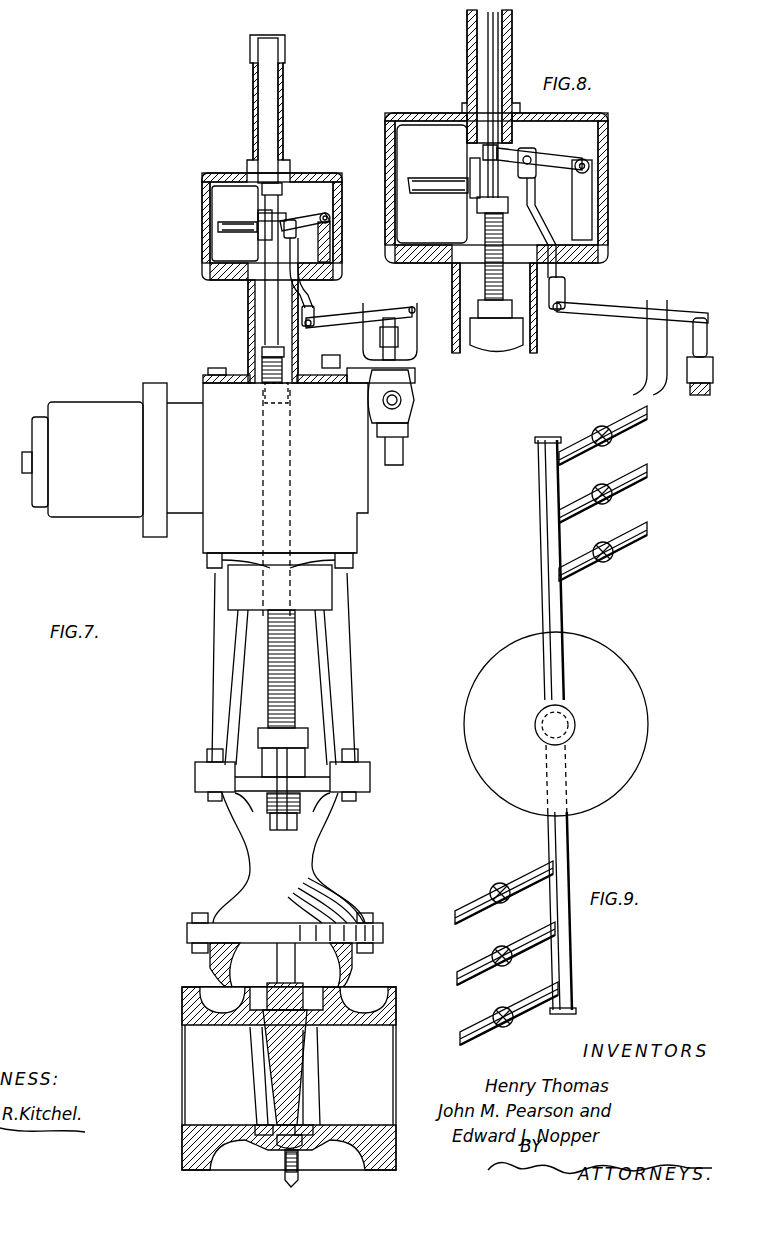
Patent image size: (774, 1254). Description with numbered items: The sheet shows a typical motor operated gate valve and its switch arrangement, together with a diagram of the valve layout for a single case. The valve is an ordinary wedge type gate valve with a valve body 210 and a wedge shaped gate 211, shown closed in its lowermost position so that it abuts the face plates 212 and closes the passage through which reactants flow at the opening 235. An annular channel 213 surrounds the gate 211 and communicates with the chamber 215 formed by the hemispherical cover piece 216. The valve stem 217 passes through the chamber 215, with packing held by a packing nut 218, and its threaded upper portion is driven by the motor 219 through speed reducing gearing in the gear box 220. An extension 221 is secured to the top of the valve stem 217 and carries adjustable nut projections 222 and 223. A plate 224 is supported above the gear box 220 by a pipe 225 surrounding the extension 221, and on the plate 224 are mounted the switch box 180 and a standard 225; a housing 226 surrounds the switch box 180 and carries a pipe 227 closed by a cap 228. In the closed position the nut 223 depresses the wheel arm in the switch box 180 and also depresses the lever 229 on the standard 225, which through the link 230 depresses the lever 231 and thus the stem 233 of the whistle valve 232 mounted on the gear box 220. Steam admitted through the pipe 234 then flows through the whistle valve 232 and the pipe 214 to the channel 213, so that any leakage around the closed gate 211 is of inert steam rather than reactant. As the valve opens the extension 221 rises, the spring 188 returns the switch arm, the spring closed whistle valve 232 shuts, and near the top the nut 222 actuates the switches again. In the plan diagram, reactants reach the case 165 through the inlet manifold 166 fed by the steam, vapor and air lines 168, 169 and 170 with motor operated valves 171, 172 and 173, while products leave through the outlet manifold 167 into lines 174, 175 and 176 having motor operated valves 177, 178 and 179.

In FIG. 9, the case 165 is at (614, 662).
In FIG. 9, the inlet manifold 166 is at (545, 572).
In FIG. 9, the outlet manifold 167 is at (570, 852).
In FIG. 9, the steam line 168 is at (628, 538).
In FIG. 9, the vapor line 169 is at (627, 480).
In FIG. 9, the air line 170 is at (626, 428).
In FIG. 9, the motor operated valve 171 is at (596, 549).
In FIG. 9, the motor operated valve 172 is at (594, 490).
In FIG. 9, the motor operated valve 173 is at (594, 431).
In FIG. 9, the steam line 174 is at (482, 902).
In FIG. 9, the vapor line 175 is at (487, 960).
In FIG. 9, the air line 176 is at (489, 1020).
In FIG. 9, the motor operated valve 177 is at (507, 900).
In FIG. 9, the motor operated valve 178 is at (509, 961).
In FIG. 9, the motor operated valve 179 is at (510, 1022).
In FIG. 7, the switch box 180 is at (210, 198).
In FIG. 8, the switch box 180 is at (430, 130).
In FIG. 7, the spring 188 is at (246, 222).
In FIG. 8, the spring 188 is at (455, 178).
In FIG. 7, the valve body 210 is at (180, 988).
In FIG. 7, the wedge shaped gate 211 is at (280, 1065).
In FIG. 7, the face plates 212 is at (305, 1125).
In FIG. 7, the annular channel 213 is at (288, 1142).
In FIG. 7, the pipe 214 is at (402, 398).
In FIG. 7, the chamber 215 is at (245, 965).
In FIG. 7, the hemispherical cover piece 216 is at (250, 888).
In FIG. 7, the valve stem 217 is at (282, 952).
In FIG. 7, the packing nut 218 is at (268, 737).
In FIG. 7, the motor 219 is at (75, 505).
In FIG. 7, the gear box 220 is at (197, 508).
In FIG. 7, the extension 221 is at (268, 314).
In FIG. 8, the extension 221 is at (497, 54).
In FIG. 7, the projection 222 is at (265, 352).
In FIG. 8, the projection 222 is at (477, 208).
In FIG. 7, the projection 223 is at (284, 188).
In FIG. 7, the plate 224 is at (208, 274).
In FIG. 8, the plate 224 is at (605, 255).
In FIG. 7, the pipe / standard 225 is at (332, 243).
In FIG. 8, the pipe / standard 225 is at (588, 200).
In FIG. 7, the housing 226 is at (205, 222).
In FIG. 8, the housing 226 is at (610, 125).
In FIG. 7, the pipe 227 is at (253, 85).
In FIG. 8, the pipe 227 is at (467, 52).
In FIG. 7, the cap 228 is at (250, 48).
In FIG. 7, the lever 229 is at (308, 220).
In FIG. 8, the lever 229 is at (560, 158).
In FIG. 7, the link 230 is at (338, 257).
In FIG. 8, the link 230 is at (560, 230).
In FIG. 7, the lever 231 is at (336, 318).
In FIG. 8, the lever 231 is at (622, 305).
In FIG. 7, the whistle valve 232 is at (412, 412).
In FIG. 7, the stem 233 is at (388, 318).
In FIG. 8, the stem 233 is at (690, 345).
In FIG. 7, the pipe 234 is at (405, 447).
In FIG. 7, the opening 235 is at (185, 1080).